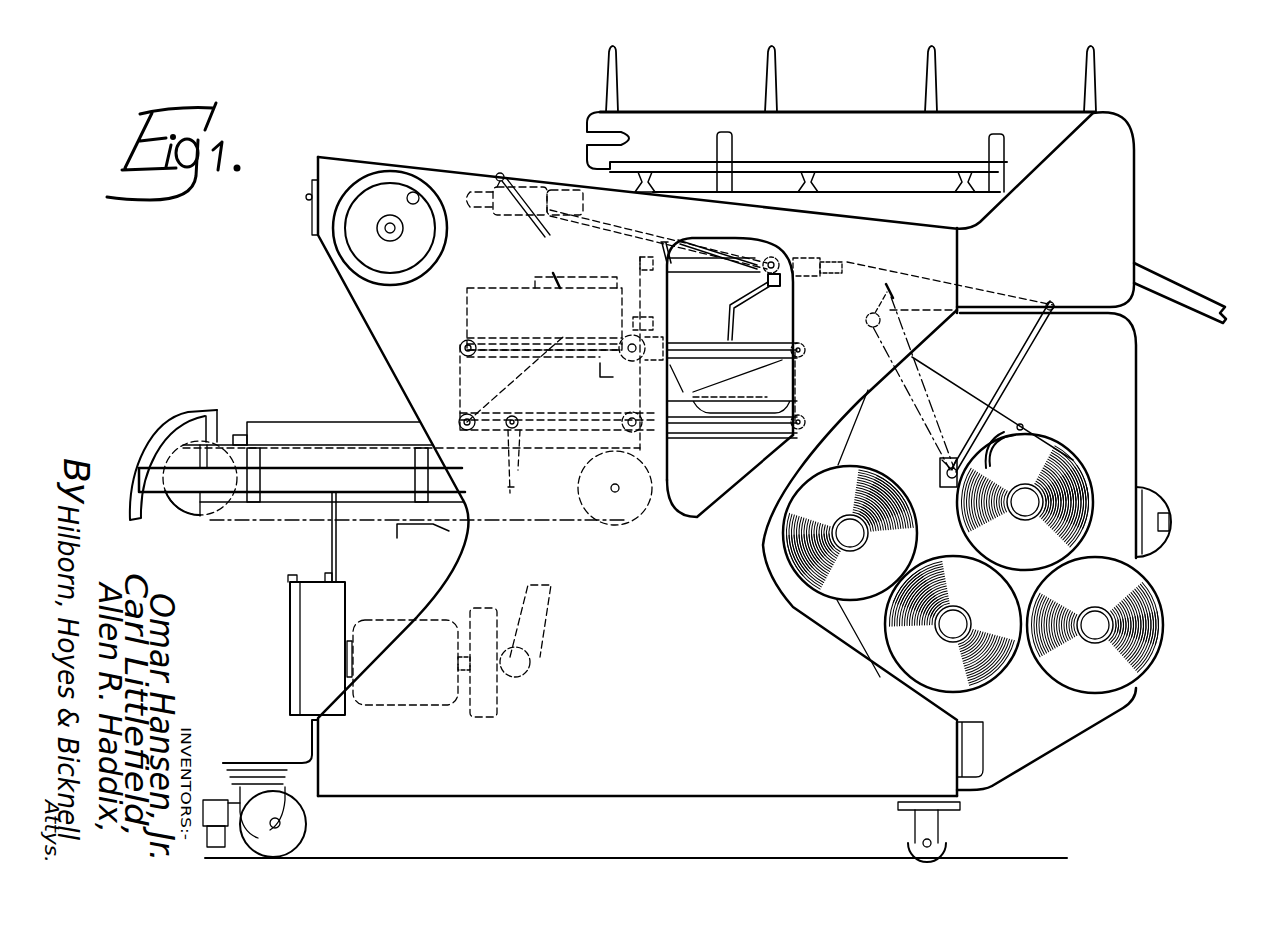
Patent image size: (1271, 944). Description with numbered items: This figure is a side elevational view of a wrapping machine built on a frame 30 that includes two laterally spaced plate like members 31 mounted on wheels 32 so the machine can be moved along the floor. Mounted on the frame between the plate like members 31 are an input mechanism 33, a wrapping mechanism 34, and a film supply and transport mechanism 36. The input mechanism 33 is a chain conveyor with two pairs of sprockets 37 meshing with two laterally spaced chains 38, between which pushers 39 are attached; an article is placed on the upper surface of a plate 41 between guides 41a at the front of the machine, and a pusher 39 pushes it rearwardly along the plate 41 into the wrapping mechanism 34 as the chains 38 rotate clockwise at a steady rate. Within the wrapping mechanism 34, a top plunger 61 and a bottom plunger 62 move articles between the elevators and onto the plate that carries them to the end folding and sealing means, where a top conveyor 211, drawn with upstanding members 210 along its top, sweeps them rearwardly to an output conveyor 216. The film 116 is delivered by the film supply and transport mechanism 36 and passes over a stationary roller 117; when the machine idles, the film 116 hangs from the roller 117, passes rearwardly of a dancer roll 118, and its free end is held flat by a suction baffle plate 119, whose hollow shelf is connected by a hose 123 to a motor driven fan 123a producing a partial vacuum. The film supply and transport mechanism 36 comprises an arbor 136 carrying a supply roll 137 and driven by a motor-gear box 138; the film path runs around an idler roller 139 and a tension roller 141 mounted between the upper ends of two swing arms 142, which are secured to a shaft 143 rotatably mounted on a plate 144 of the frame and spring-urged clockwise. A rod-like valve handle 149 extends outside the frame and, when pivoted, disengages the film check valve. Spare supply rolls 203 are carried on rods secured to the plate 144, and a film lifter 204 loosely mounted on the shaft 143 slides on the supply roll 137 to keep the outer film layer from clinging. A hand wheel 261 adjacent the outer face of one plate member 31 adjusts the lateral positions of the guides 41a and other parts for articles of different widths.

The frame 30 is at (540, 798).
The plate like members 31 is at (768, 787).
The wheels 32 is at (300, 825).
The input mechanism 33 is at (400, 466).
The wrapping mechanism 34 is at (556, 333).
The film supply and transport mechanism 36 is at (978, 494).
The sprockets 37 is at (208, 507).
The chains 38 is at (558, 523).
The pushers 39 is at (240, 433).
The plate 41 is at (550, 452).
The guides 41a is at (364, 424).
The top plunger 61 is at (540, 217).
The bottom plunger 62 is at (737, 294).
The film 116 is at (950, 380).
The stationary roller 117 is at (652, 278).
The dancer roll 118 is at (628, 310).
The suction baffle plate 119 is at (600, 371).
The hose 123 is at (540, 620).
The motor driven fan 123a is at (487, 717).
The arbor 136 is at (1013, 507).
The supply roll 137 is at (1063, 457).
The motor-gear box 138 is at (1160, 550).
The idler roller 139 is at (885, 338).
The tension roller 141 is at (1054, 302).
The swing arms 142 is at (1030, 370).
The shaft 143 is at (940, 477).
The plate 144 is at (1131, 360).
The valve handle 149 is at (660, 247).
The spare supply rolls 203 is at (823, 580).
The film lifter 204 is at (1014, 455).
The posts 210 is at (760, 68).
The top conveyor 211 is at (788, 119).
The output conveyor 216 is at (1207, 297).
The hand wheel 261 is at (335, 264).